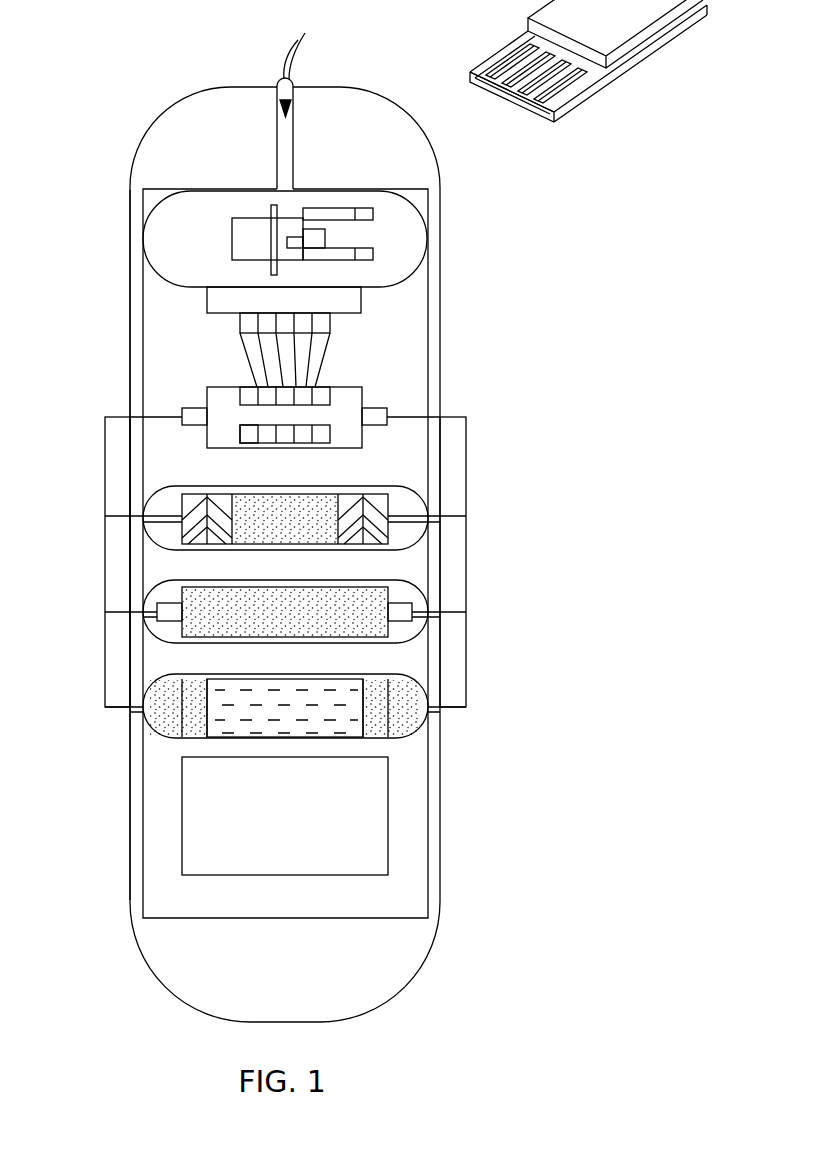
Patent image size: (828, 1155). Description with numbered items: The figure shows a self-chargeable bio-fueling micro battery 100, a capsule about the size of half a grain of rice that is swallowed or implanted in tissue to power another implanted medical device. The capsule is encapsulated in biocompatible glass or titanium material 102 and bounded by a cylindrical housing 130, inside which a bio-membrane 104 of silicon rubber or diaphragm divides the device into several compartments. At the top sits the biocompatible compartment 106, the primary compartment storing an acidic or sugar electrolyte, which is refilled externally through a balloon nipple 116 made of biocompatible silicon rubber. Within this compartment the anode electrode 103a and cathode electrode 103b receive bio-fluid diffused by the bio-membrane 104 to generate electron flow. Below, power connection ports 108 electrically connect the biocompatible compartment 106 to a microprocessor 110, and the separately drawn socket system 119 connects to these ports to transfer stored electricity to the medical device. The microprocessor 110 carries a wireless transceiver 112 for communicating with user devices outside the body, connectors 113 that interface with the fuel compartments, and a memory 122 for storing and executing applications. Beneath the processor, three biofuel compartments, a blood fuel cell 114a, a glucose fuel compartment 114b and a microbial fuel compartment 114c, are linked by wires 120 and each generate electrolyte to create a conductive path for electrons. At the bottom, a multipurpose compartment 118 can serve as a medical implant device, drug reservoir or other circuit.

The micro battery 100 is at (117, 60).
The glass or titanium material 102 is at (442, 282).
The bio-membrane 104 is at (429, 205).
The biocompatible compartment 106 is at (412, 193).
The anode electrode 103a is at (343, 210).
The cathode electrode 103b is at (345, 258).
The power connection ports 108 is at (333, 322).
The microprocessor 110 is at (281, 395).
The wireless transceiver 112 is at (330, 436).
The connectors 113 is at (260, 418).
The blood fuel cell 114a is at (413, 490).
The glucose fuel compartment 114b is at (413, 583).
The microbial fuel compartment 114c is at (413, 677).
The balloon nipple 116 is at (292, 70).
The multipurpose compartment 118 is at (388, 817).
The socket system 119 is at (588, 97).
The wires 120 is at (100, 436).
The memory 122 is at (246, 433).
The cylindrical housing 130 is at (123, 213).